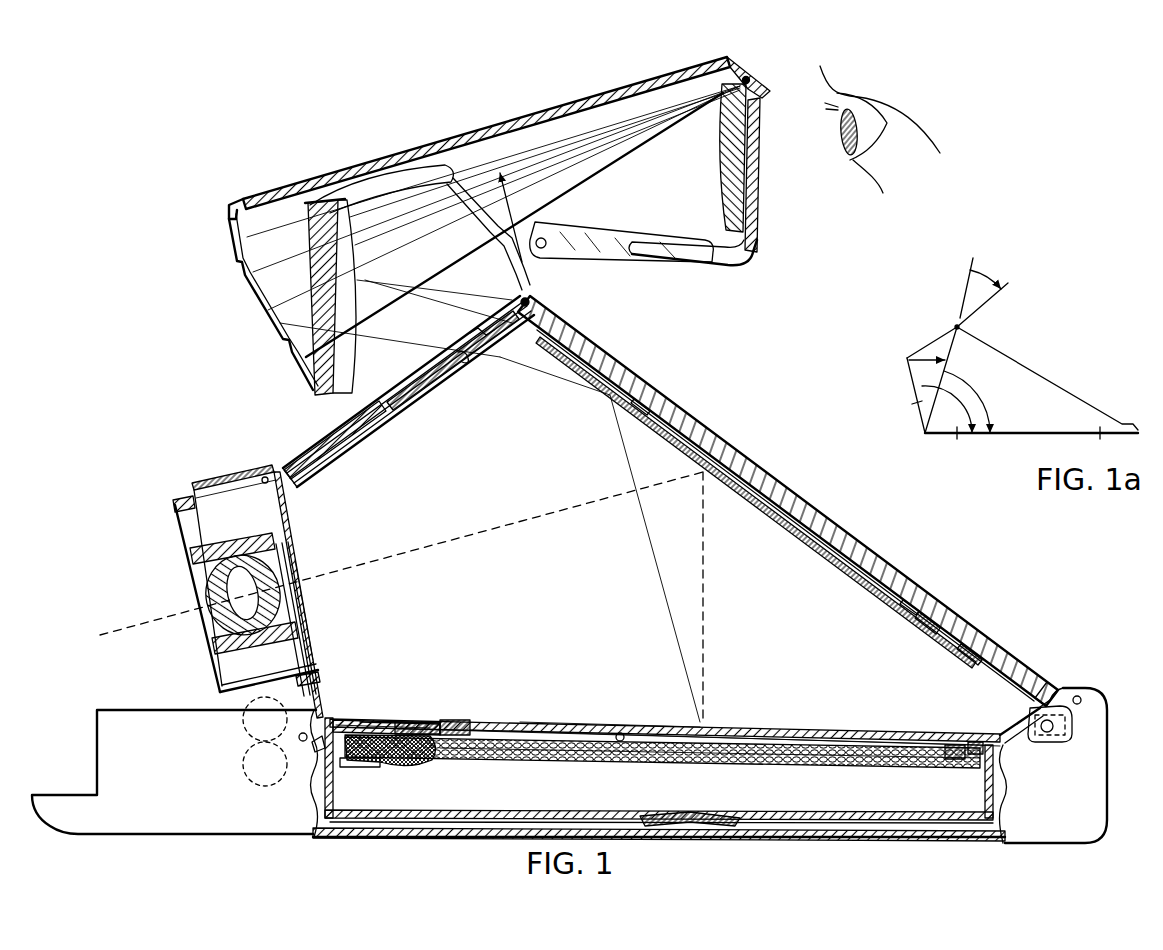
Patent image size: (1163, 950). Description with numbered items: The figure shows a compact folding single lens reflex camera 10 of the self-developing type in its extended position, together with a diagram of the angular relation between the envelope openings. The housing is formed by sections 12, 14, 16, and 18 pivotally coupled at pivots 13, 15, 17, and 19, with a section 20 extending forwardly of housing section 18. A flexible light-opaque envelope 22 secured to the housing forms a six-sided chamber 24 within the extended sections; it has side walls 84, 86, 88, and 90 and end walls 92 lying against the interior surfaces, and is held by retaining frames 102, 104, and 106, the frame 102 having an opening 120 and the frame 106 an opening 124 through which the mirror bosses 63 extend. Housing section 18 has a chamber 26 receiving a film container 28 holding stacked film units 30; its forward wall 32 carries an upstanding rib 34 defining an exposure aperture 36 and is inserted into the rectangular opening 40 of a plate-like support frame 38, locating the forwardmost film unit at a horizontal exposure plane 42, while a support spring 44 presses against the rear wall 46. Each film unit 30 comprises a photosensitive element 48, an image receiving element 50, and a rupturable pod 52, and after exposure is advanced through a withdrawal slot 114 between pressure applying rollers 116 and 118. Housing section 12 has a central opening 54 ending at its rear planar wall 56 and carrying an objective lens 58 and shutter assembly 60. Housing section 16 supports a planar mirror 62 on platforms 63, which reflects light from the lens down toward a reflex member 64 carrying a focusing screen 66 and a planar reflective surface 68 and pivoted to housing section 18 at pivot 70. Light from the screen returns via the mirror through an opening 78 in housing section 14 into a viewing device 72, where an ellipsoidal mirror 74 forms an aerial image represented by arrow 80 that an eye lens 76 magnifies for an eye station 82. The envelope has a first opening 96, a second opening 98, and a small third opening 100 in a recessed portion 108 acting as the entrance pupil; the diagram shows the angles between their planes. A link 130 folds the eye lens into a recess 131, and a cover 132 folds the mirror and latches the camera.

In FIG. 1, the camera 10 is at (168, 392).
In FIG. 1, the housing section 12 is at (165, 487).
In FIG. 1, the pivot 13 is at (263, 483).
In FIG. 1, the housing section 14 is at (288, 434).
In FIG. 1, the pivot 15 is at (530, 299).
In FIG. 1, the housing section 16 is at (790, 462).
In FIG. 1, the pivot 17 is at (1082, 695).
In FIG. 1, the housing section 18 is at (1112, 762).
In FIG. 1, the pivot 19 is at (303, 732).
In FIG. 1, the section 20 is at (62, 758).
In FIG. 1a, the envelope 22 is at (1068, 352).
In FIG. 1, the chamber 24 is at (1000, 676).
In FIG. 1, the chamber 26 is at (936, 830).
In FIG. 1, the film container 28 is at (864, 826).
In FIG. 1, the film unit 30 is at (533, 752).
In FIG. 1, the forward wall 32 is at (425, 722).
In FIG. 1, the upstanding rib 34 is at (449, 722).
In FIG. 1, the aperture 36 is at (500, 721).
In FIG. 1, the support frame 38 is at (1002, 736).
In FIG. 1, the rectangular opening 40 is at (975, 740).
In FIG. 1, the exposure plane 42 is at (950, 742).
In FIG. 1, the support spring 44 is at (668, 832).
In FIG. 1, the rear wall 46 is at (798, 818).
In FIG. 1, the photosensitive element 48 is at (680, 760).
In FIG. 1, the image receiving element 50 is at (833, 755).
In FIG. 1, the rupturable pod 52 is at (376, 760).
In FIG. 1, the central opening 54 is at (190, 572).
In FIG. 1, the rear planar wall 56 is at (280, 509).
In FIG. 1, the objective lens 58 is at (215, 612).
In FIG. 1, the shutter assembly 60 is at (293, 549).
In FIG. 1, the planar mirror 62 is at (826, 560).
In FIG. 1, the platforms 63 is at (605, 372).
In FIG. 1, the reflex member 64 is at (592, 719).
In FIG. 1, the focusing screen 66 is at (553, 722).
In FIG. 1, the planar reflective surface 68 is at (622, 732).
In FIG. 1, the pivot 70 is at (1056, 738).
In FIG. 1, the viewing device 72 is at (265, 183).
In FIG. 1, the ellipsoidal mirror 74 is at (342, 257).
In FIG. 1, the eye lens 76 is at (727, 142).
In FIG. 1, the opening 78 is at (411, 372).
In FIG. 1, the arrow 80 is at (497, 203).
In FIG. 1, the eye station 82 is at (838, 138).
In FIG. 1, the side wall 84 is at (318, 665).
In FIG. 1, the side wall 86 is at (410, 400).
In FIG. 1, the side wall 88 is at (800, 515).
In FIG. 1, the side wall 90 is at (390, 722).
In FIG. 1, the end wall 92 is at (547, 598).
In FIG. 1, the first opening 96 is at (306, 601).
In FIG. 1a, the first opening 96 is at (908, 378).
In FIG. 1, the second opening 98 is at (344, 722).
In FIG. 1a, the second opening 98 is at (963, 437).
In FIG. 1, the third opening 100 is at (480, 336).
In FIG. 1a, the third opening 100 is at (953, 326).
In FIG. 1, the retaining frame 102 is at (304, 629).
In FIG. 1, the retaining frame 104 is at (338, 718).
In FIG. 1, the retaining frame 106 is at (960, 640).
In FIG. 1, the recessed portion 108 is at (463, 362).
In FIG. 1, the withdrawal slot 114 is at (343, 762).
In FIG. 1, the pressure applying roller 116 is at (243, 722).
In FIG. 1, the pressure applying roller 118 is at (250, 780).
In FIG. 1, the opening 120 is at (291, 534).
In FIG. 1, the opening 124 is at (936, 620).
In FIG. 1, the link 130 is at (640, 262).
In FIG. 1, the recess 131 is at (560, 268).
In FIG. 1, the cover 132 is at (230, 216).